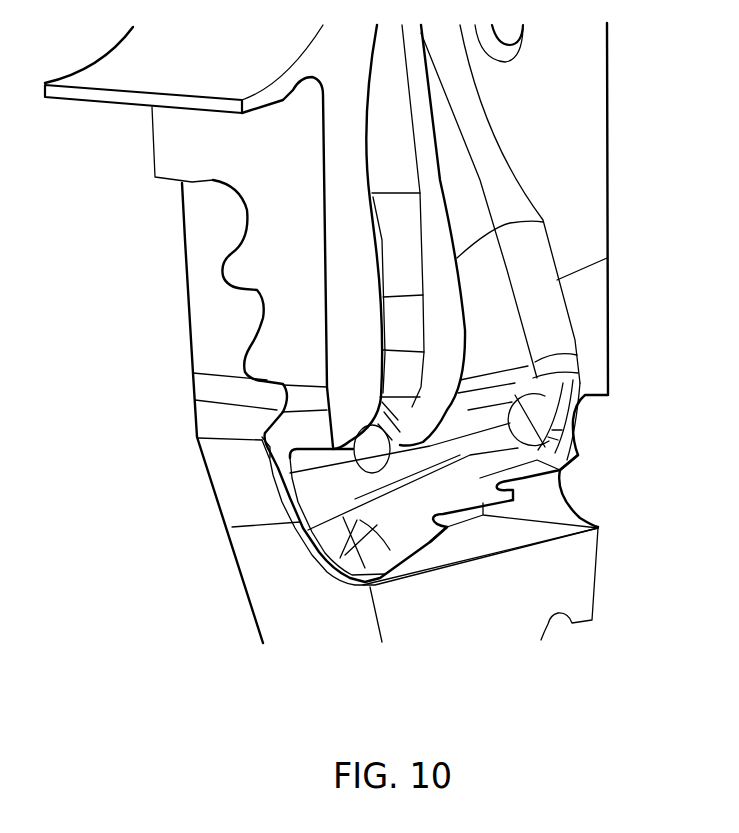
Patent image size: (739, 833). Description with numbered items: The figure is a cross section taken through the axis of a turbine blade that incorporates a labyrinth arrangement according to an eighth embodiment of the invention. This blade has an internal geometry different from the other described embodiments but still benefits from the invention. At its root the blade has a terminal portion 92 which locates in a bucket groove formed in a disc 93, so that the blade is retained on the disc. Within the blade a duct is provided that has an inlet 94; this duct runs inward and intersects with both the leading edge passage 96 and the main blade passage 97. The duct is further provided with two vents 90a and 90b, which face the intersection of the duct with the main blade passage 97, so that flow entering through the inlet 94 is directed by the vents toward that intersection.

The terminal portion 92 is at (590, 95).
The disc 93 is at (430, 607).
The inlet 94 is at (335, 510).
The leading edge passage 96 is at (398, 265).
The main blade passage 97 is at (503, 297).
The vent 90a is at (463, 520).
The vent 90b is at (527, 485).